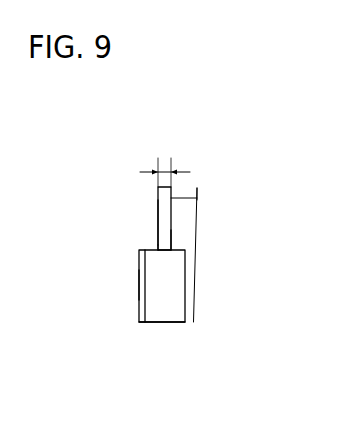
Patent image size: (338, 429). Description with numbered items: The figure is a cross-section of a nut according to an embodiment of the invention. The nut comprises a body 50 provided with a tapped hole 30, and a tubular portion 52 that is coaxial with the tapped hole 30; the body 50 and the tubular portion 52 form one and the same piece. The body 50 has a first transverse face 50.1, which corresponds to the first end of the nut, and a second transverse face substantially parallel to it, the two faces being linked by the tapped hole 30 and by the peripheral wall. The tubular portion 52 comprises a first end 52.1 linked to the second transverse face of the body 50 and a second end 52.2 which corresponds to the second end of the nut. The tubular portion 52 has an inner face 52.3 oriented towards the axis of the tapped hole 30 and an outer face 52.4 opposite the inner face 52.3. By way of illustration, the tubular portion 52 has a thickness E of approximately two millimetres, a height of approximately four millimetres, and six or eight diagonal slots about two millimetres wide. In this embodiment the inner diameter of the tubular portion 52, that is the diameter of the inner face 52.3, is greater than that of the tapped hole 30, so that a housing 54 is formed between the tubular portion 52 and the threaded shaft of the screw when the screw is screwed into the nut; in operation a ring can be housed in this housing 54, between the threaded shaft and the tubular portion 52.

The tapped hole 30 is at (135, 282).
The body 50 is at (203, 285).
The first transverse face 50.1 is at (160, 323).
The tubular portion 52 is at (204, 214).
The first end 52.1 is at (172, 242).
The second end 52.2 is at (159, 186).
The inner face 52.3 is at (158, 222).
The outer face 52.4 is at (197, 189).
The housing 54 is at (151, 243).
The thickness E is at (172, 158).